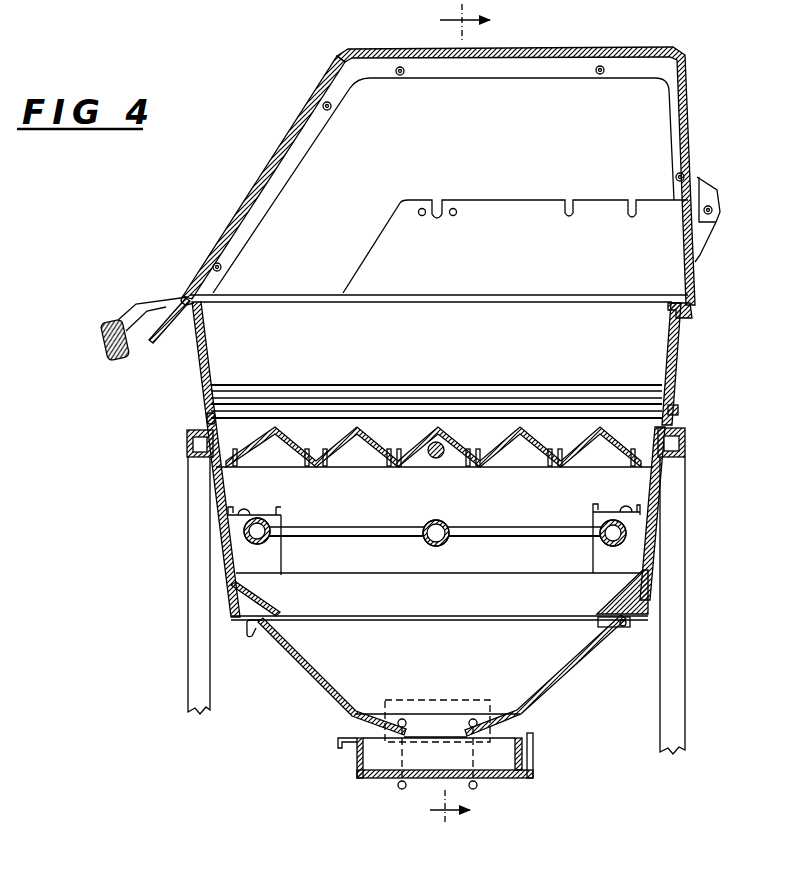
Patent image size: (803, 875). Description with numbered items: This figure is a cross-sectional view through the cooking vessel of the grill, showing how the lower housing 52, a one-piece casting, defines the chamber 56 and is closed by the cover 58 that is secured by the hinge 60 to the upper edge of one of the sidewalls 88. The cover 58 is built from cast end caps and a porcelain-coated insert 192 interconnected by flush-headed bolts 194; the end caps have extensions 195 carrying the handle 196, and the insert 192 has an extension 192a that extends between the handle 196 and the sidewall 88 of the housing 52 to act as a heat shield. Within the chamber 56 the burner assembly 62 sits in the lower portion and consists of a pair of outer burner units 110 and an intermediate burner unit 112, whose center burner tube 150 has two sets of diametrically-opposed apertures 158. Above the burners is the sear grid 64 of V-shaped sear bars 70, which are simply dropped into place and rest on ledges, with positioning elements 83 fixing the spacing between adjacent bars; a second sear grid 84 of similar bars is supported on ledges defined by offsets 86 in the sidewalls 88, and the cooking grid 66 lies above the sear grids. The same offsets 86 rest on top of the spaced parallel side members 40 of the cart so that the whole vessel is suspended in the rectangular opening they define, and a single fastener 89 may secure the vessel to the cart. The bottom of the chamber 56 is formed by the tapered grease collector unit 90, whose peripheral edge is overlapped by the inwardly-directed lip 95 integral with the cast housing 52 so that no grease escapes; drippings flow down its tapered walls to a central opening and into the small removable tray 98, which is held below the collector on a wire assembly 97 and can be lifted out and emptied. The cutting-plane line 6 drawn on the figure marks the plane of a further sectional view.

The section line 6- 6 is at (450, 414).
The side members 40 is at (192, 438).
The lower housing 52 is at (190, 381).
The chamber 56 is at (636, 349).
The cover 58 is at (316, 101).
The hinge 60 is at (711, 211).
The burner assembly 62 is at (370, 542).
The sear grid 64 is at (624, 437).
The cooking grid 66 is at (404, 304).
The sear bars 70 is at (462, 437).
The positioning elements 83 is at (232, 460).
The second sear grid 84 is at (678, 392).
The offsets 86 is at (206, 413).
The sidewalls 88 is at (198, 350).
The fastener 89 is at (430, 445).
The grease collector unit 90 is at (560, 693).
The inwardly-directed lip 95 is at (612, 627).
The wire assembly 97 is at (506, 779).
The small removable tray 98 is at (357, 762).
The outer burner units 110 is at (242, 536).
The intermediate burner unit 112 is at (445, 551).
The center burner tube 150 is at (430, 547).
The apertures 158 is at (468, 525).
The insert 192 is at (552, 57).
The extension 192a is at (163, 296).
The flush-headed bolts 194 is at (597, 76).
The extensions 195 is at (141, 311).
The handle 196 is at (105, 336).